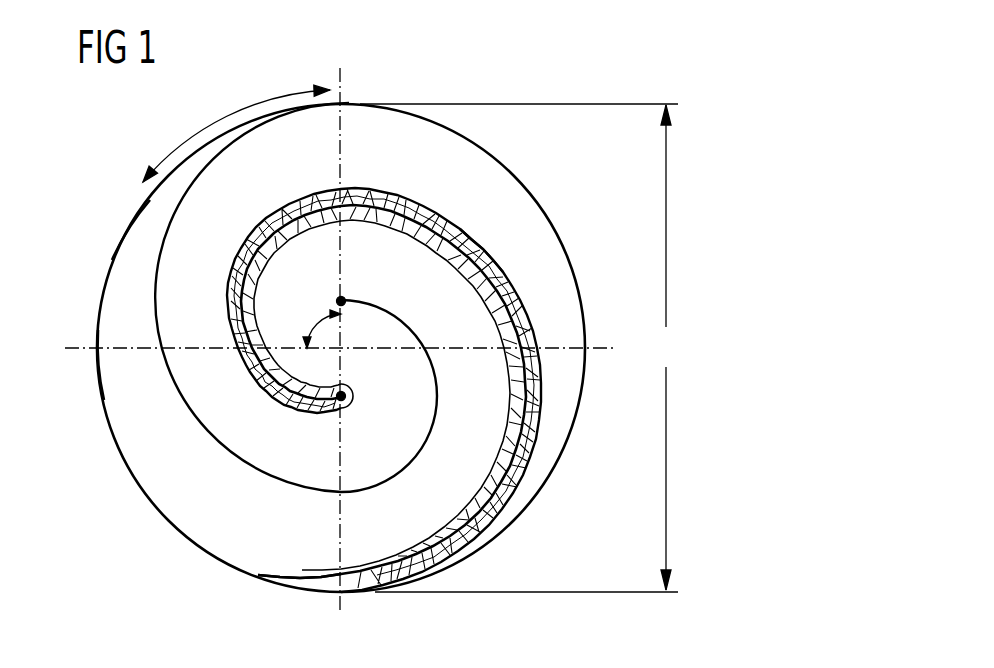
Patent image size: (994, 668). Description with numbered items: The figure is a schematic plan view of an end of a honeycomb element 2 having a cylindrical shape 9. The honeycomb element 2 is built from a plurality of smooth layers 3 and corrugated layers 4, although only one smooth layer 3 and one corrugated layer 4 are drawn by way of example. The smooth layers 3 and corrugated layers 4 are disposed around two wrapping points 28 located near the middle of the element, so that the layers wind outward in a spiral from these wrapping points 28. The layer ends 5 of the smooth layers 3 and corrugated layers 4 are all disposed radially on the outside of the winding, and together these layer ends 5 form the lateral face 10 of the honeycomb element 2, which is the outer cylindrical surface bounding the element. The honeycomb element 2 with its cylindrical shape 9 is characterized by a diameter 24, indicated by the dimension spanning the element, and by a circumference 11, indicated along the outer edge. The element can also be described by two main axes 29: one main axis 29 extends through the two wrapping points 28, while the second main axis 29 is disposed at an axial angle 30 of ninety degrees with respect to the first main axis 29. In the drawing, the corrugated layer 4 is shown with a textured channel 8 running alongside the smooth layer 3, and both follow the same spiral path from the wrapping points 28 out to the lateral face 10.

The honeycomb element 2 is at (116, 442).
The smooth layer 3 is at (236, 296).
The corrugated layer 4 is at (287, 204).
The layer ends 5 is at (218, 563).
The spiral channel 8 is at (500, 258).
The cylindrical shape 9 is at (108, 243).
The lateral face 10 is at (100, 394).
The circumference 11 is at (252, 92).
The diameter 24 is at (520, 348).
The wrapping points 28 is at (338, 299).
The main axes 29 is at (354, 85).
The axial angle 30 is at (322, 322).